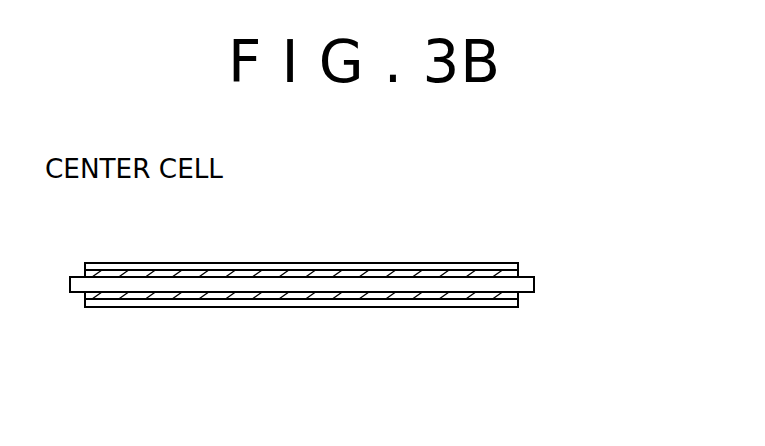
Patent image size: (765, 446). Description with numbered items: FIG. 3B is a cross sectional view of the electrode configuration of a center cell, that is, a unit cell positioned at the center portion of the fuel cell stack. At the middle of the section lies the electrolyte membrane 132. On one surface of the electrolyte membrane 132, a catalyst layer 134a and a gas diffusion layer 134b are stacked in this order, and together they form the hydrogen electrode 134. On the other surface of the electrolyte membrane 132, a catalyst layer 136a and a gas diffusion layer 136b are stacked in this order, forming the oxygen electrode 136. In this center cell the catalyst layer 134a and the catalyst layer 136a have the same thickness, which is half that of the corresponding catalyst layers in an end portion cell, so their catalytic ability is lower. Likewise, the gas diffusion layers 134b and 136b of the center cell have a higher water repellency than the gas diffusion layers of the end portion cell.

The electrolyte membrane 132 is at (535, 278).
The hydrogen electrode 134 is at (390, 223).
The catalyst layer 134a is at (519, 272).
The gas diffusion layer 134b is at (520, 265).
The oxygen electrode 136 is at (390, 344).
The catalyst layer 136a is at (520, 299).
The gas diffusion layer 136b is at (520, 305).